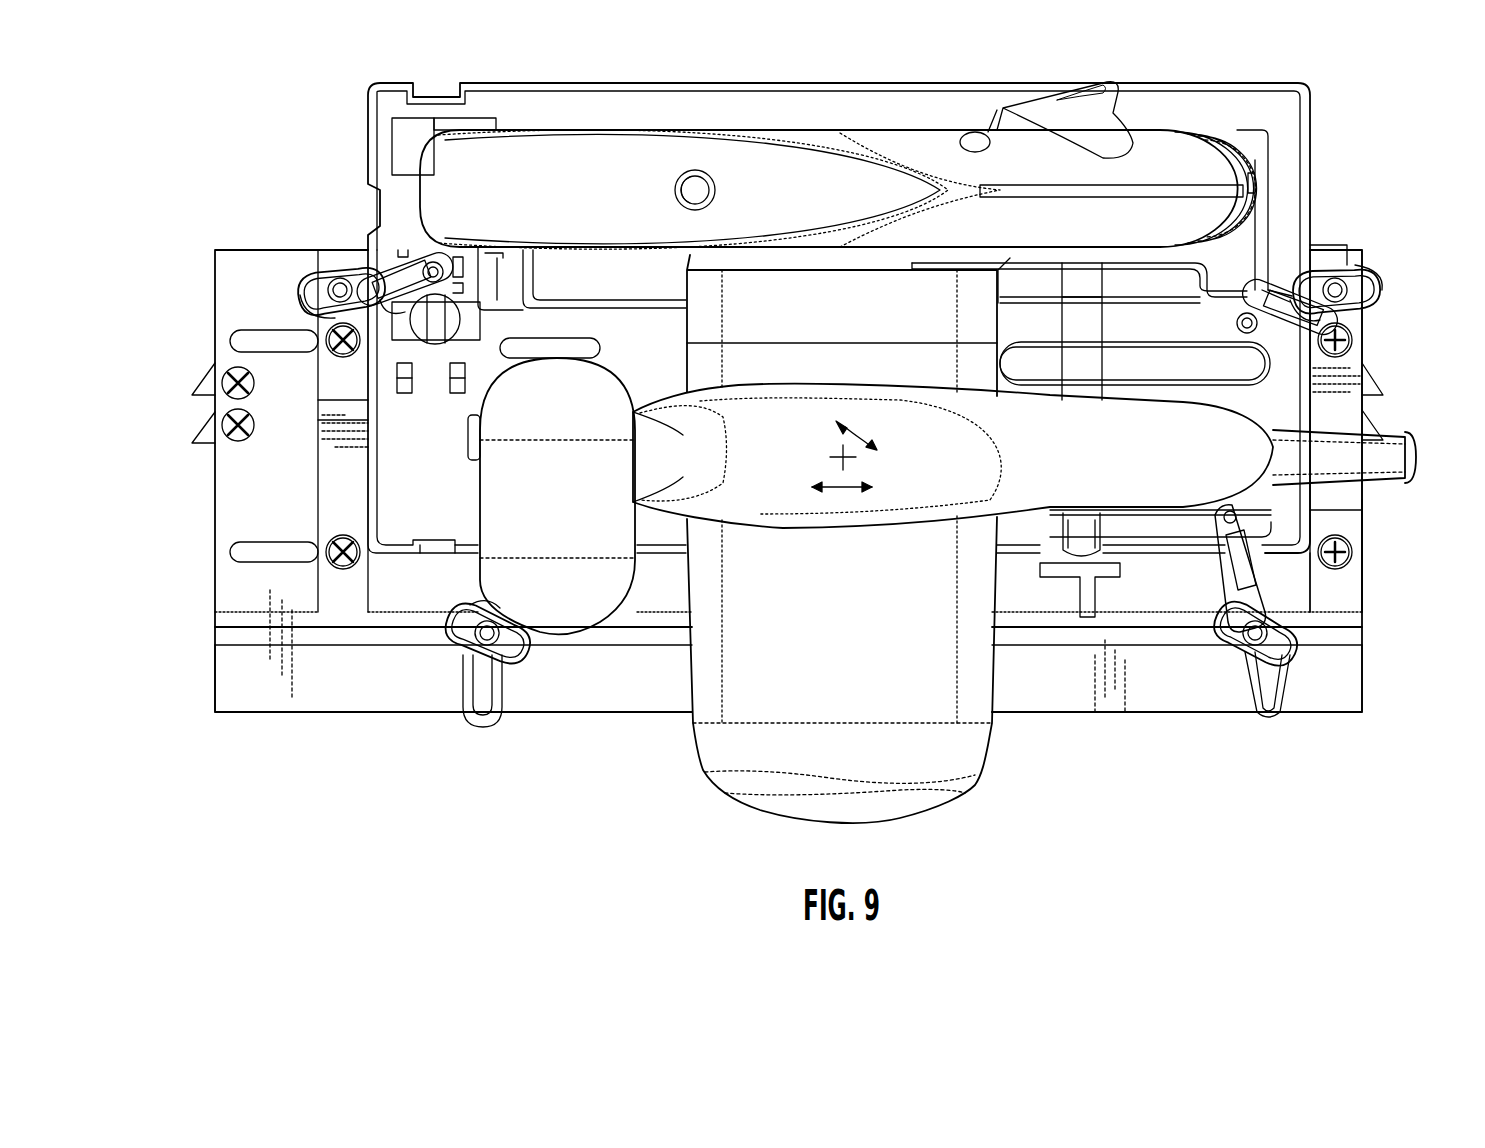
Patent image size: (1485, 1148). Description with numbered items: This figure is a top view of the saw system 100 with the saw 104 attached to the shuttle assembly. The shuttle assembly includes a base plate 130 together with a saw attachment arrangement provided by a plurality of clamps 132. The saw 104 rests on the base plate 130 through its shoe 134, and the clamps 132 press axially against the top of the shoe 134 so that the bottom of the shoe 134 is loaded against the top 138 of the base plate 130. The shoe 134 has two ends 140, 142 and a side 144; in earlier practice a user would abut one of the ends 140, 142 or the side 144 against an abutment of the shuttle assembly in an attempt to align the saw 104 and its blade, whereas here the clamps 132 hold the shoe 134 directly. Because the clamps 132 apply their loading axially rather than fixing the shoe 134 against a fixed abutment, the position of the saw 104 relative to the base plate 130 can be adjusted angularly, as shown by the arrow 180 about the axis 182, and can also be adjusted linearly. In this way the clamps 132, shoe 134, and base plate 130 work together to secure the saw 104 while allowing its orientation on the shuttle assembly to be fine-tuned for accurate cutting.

The saw system 100 is at (305, 125).
The saw 104 is at (710, 752).
The base plate 130 is at (232, 493).
The clamps 132 is at (390, 280).
The shoe 134 is at (415, 505).
The top of the base plate 138 is at (322, 678).
The end of the shoe 140 is at (1313, 513).
The end of the shoe 142 is at (365, 405).
The side of the shoe 144 is at (1178, 555).
The arrow 180 is at (860, 424).
The axis 182 is at (840, 455).